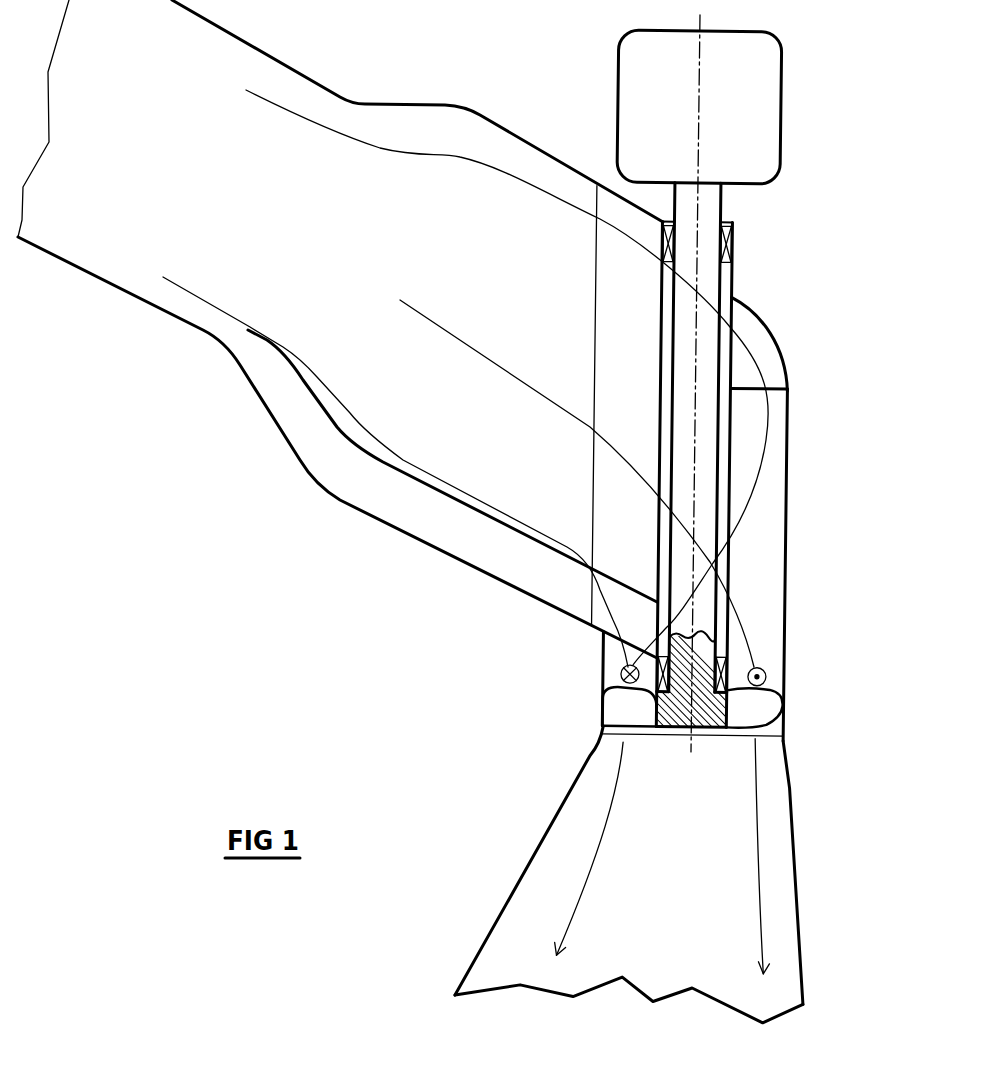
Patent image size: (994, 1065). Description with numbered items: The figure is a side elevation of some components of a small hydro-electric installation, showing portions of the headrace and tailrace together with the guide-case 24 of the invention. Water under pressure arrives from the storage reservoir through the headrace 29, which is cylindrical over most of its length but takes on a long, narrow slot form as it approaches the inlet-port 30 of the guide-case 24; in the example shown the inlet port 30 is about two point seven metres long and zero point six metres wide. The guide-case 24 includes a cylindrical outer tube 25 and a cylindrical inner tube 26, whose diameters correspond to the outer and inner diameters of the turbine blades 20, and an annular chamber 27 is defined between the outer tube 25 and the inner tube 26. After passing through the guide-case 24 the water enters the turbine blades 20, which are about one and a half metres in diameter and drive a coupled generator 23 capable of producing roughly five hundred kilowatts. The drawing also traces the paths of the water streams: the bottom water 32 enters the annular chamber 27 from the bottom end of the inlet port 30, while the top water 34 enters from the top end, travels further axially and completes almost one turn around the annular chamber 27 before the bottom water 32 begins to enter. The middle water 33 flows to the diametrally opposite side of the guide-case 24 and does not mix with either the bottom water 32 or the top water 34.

The turbine blades 20 is at (757, 703).
The generator 23 is at (677, 113).
The guide-case 24 is at (788, 472).
The outer tube 25 is at (788, 630).
The inner tube 26 is at (733, 282).
The annular chamber 27 is at (765, 560).
The headrace 29 is at (213, 198).
The inlet-port 30 is at (590, 504).
The bottom water 32 is at (467, 490).
The middle water 33 is at (555, 395).
The top water 34 is at (560, 197).